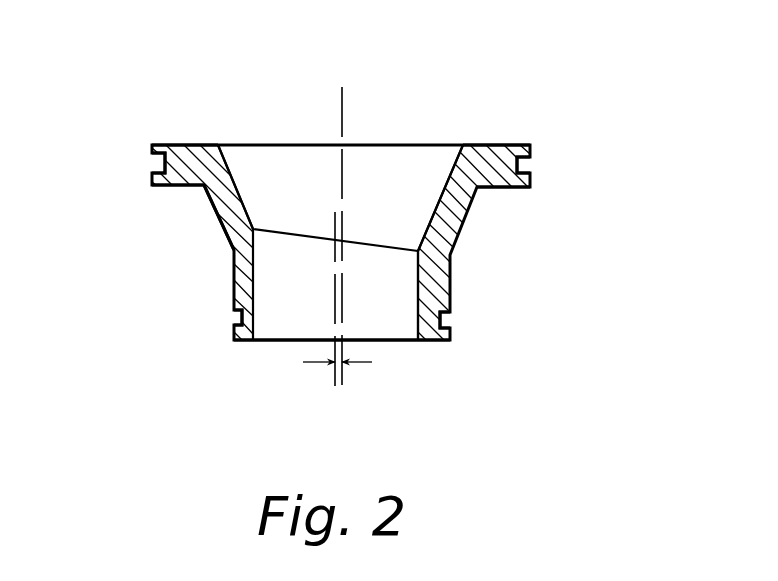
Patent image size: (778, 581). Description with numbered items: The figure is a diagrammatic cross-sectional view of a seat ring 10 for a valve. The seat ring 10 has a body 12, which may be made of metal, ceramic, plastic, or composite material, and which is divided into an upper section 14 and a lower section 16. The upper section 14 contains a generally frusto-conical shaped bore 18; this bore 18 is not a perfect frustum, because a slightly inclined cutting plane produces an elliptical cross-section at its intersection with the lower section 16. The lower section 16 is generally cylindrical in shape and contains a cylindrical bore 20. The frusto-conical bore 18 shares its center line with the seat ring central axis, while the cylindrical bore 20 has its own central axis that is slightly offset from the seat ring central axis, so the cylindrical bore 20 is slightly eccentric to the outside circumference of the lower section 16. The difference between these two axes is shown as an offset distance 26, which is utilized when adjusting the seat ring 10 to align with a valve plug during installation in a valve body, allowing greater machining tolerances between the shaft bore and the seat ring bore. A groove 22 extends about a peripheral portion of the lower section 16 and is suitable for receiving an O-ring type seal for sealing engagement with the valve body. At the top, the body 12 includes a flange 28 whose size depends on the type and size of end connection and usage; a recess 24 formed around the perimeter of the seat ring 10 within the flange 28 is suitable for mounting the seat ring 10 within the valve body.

The seat ring 10 is at (270, 100).
The body 12 is at (240, 245).
The upper section 14 is at (397, 209).
The lower section 16 is at (374, 299).
The frusto-conical shaped bore 18 is at (265, 182).
The cylindrical bore 20 is at (264, 340).
The groove 22 is at (235, 318).
The recess 24 is at (158, 163).
The offset distance 26 is at (358, 363).
The flange 28 is at (178, 147).